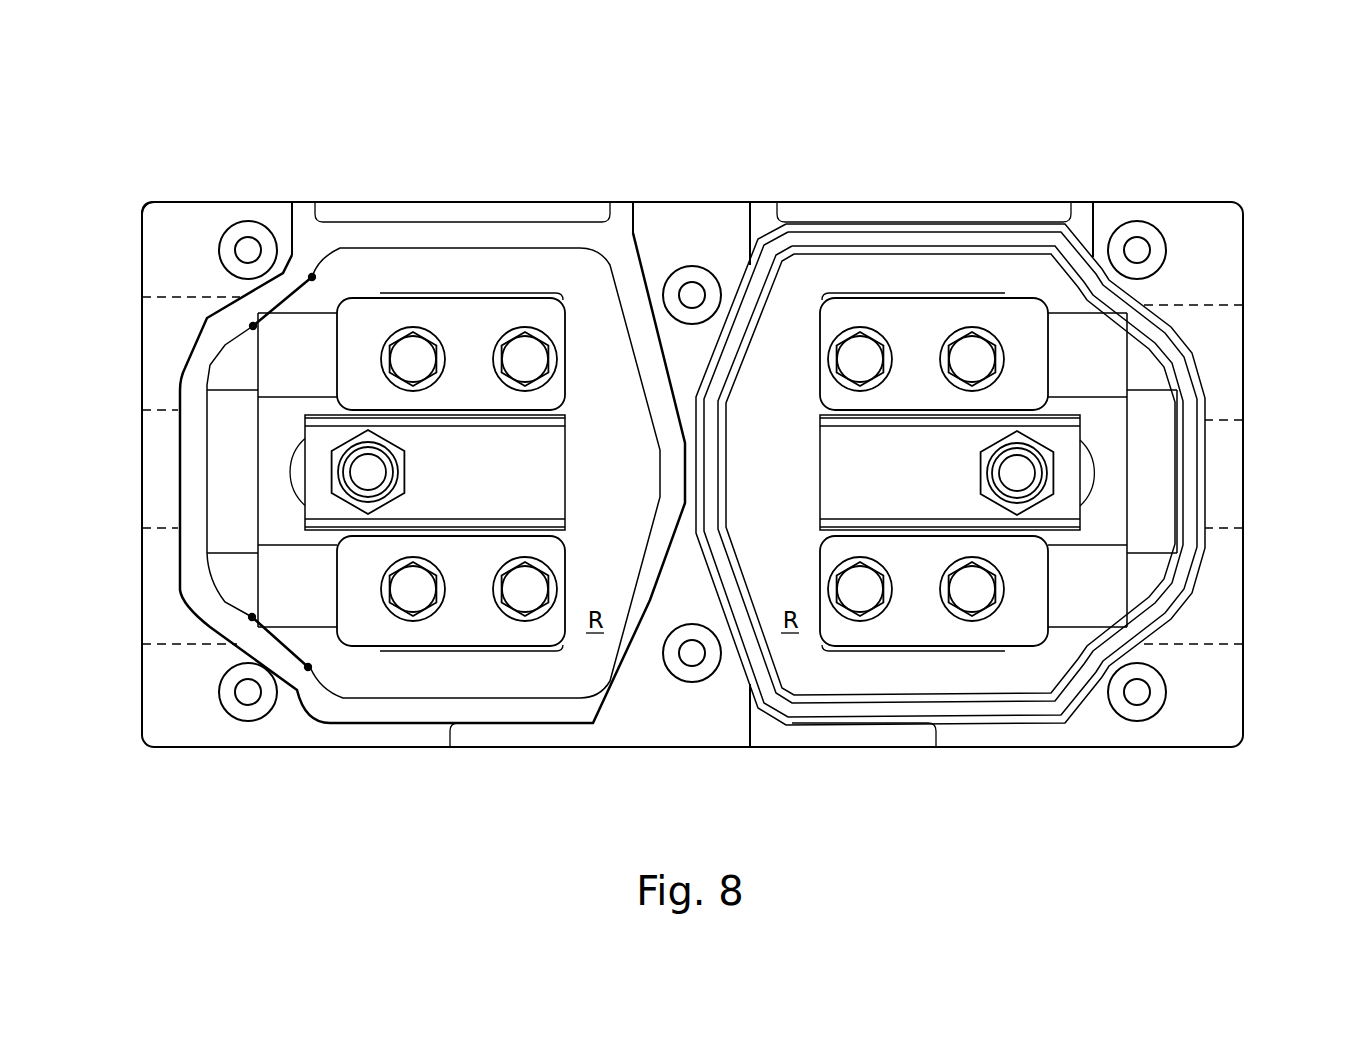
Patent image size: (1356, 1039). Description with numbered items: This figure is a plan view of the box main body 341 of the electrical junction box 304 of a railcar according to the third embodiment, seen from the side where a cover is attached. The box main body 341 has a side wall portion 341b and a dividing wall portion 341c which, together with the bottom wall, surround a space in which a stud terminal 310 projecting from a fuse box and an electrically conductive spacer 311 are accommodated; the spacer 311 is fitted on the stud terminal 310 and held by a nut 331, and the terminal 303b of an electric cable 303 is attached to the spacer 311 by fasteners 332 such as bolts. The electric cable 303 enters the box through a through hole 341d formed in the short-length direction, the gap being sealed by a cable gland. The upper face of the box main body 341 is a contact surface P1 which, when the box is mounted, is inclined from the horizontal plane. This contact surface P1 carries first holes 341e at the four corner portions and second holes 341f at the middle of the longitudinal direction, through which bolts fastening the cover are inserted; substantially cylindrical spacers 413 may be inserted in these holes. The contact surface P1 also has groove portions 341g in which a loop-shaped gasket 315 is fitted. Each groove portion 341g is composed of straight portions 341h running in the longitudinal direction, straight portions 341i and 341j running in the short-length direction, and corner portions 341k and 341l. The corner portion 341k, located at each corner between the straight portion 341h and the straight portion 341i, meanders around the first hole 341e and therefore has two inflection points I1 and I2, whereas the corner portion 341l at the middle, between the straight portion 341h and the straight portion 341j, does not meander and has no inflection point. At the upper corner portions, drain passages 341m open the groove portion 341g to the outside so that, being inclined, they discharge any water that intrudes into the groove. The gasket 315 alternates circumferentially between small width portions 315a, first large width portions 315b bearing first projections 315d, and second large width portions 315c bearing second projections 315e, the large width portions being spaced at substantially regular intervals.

The box main body 341 is at (185, 196).
The contact surface P1 is at (158, 200).
The electrical junction box 304 is at (720, 126).
The groove portion 341g is at (430, 218).
The straight portion 341h is at (458, 222).
The side wall portion 341b is at (548, 247).
The inflection point I1 is at (250, 326).
The inflection point I2 is at (313, 275).
The dividing wall portion 341c is at (657, 245).
The drain passage 341m is at (352, 252).
The straight portion 341j is at (652, 300).
The corner portion 341l is at (633, 218).
The second hole 341f is at (752, 230).
The first hole 341e is at (240, 218).
The corner portion 341k is at (300, 258).
The straight portion 341i is at (185, 462).
The through hole 341d is at (150, 297).
The spacer 413 is at (232, 700).
The electric cable 303 is at (225, 370).
The terminal 303b is at (520, 300).
The stud terminal 310 is at (385, 472).
The electrically conductive spacer 311 is at (410, 530).
The nut 331 is at (400, 486).
The fastener 332 is at (530, 360).
The gasket 315 is at (955, 103).
The small width portion 315a is at (1040, 226).
The first large width portion 315b is at (982, 226).
The second large width portion 315c is at (1086, 228).
The first projection 315d is at (958, 232).
The second projection 315e is at (1100, 235).